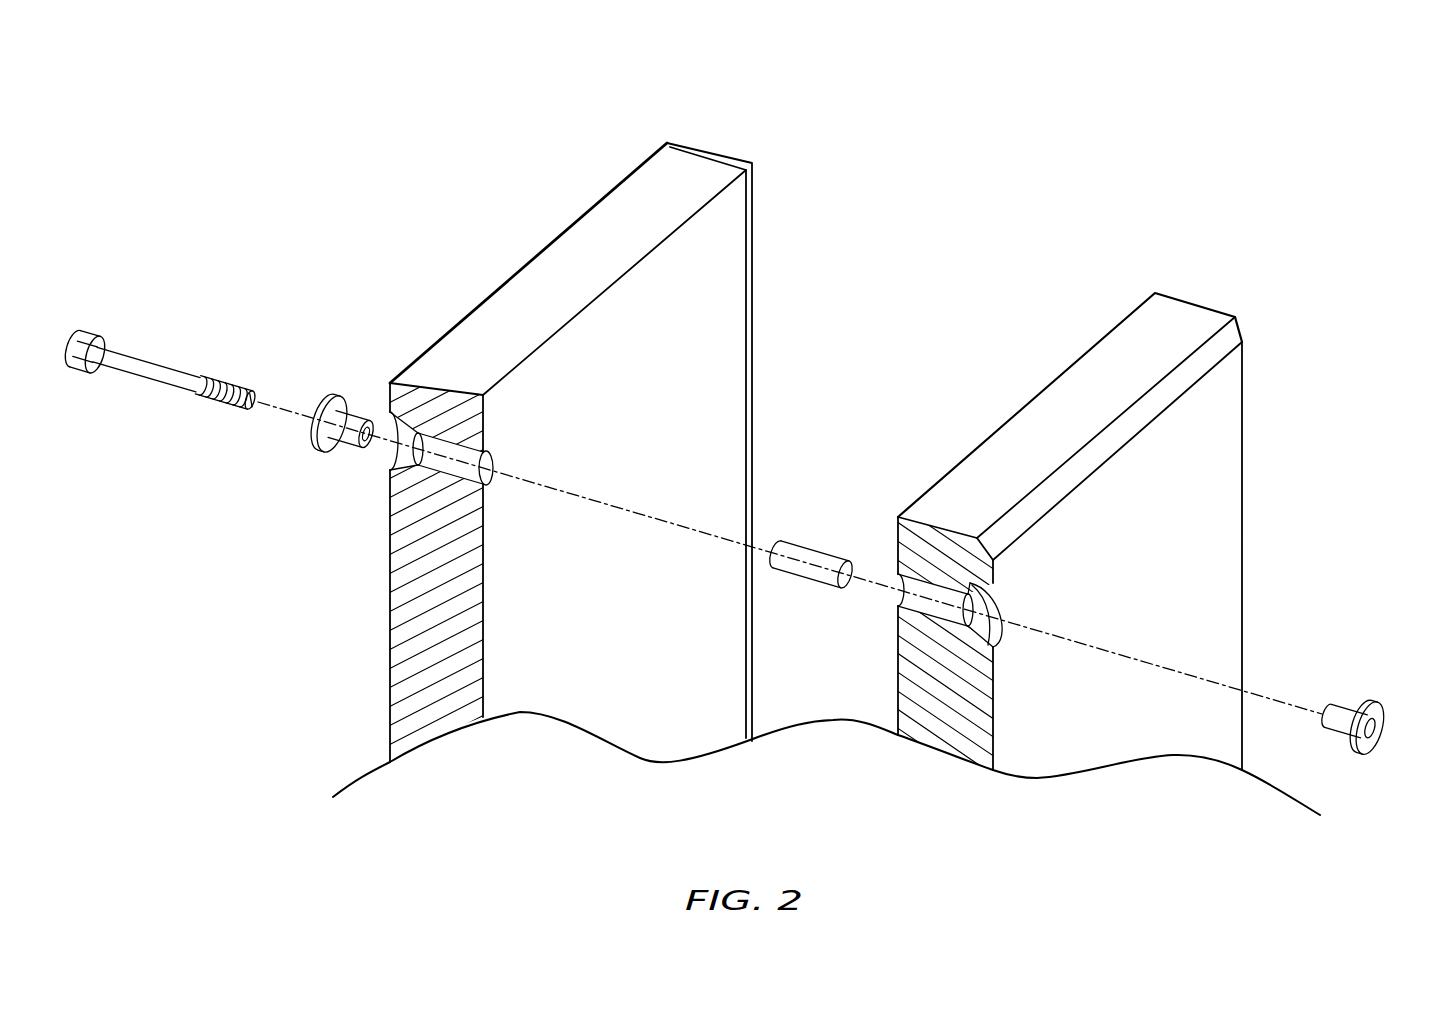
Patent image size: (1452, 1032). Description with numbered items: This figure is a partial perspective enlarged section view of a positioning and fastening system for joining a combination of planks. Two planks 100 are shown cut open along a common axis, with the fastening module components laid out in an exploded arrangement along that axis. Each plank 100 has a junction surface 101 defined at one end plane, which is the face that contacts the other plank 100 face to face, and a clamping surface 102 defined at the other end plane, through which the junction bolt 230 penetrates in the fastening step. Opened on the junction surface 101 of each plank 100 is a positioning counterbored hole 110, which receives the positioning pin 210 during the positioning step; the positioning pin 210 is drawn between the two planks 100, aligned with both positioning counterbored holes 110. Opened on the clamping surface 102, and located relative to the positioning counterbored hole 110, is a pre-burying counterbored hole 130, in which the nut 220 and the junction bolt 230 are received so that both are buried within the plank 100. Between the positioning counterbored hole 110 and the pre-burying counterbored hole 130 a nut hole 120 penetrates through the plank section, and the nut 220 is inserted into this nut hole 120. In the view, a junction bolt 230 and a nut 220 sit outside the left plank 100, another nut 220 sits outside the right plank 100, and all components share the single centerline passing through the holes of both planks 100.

The plank 100 is at (696, 178).
The junction surface 101 is at (725, 278).
The clamping surface 102 is at (1219, 509).
The positioning counterbored hole 110 is at (470, 477).
The nut hole 120 is at (392, 462).
The pre-burying counterbored hole 130 is at (378, 416).
The positioning pin 210 is at (807, 556).
The nut 220 is at (330, 400).
The junction bolt 230 is at (148, 372).